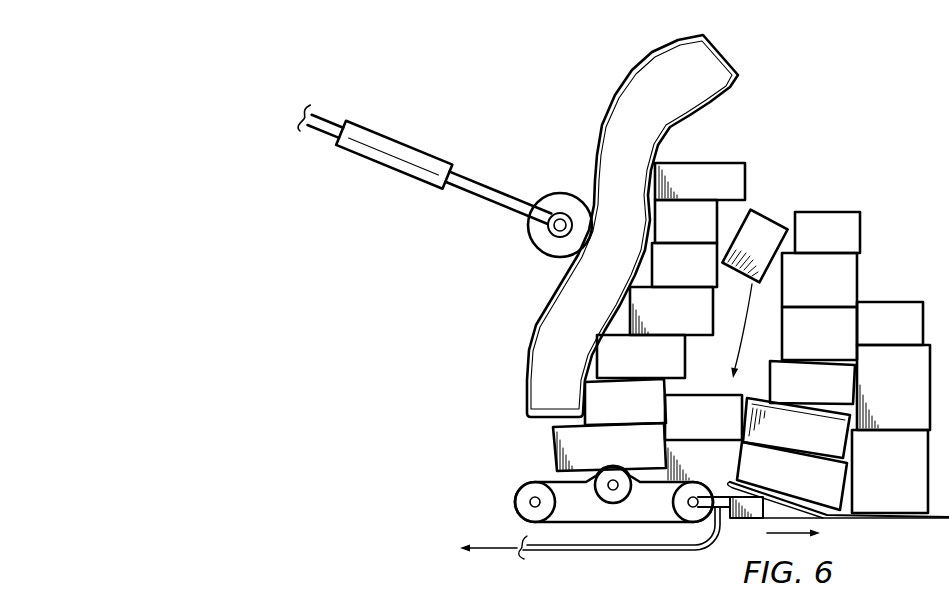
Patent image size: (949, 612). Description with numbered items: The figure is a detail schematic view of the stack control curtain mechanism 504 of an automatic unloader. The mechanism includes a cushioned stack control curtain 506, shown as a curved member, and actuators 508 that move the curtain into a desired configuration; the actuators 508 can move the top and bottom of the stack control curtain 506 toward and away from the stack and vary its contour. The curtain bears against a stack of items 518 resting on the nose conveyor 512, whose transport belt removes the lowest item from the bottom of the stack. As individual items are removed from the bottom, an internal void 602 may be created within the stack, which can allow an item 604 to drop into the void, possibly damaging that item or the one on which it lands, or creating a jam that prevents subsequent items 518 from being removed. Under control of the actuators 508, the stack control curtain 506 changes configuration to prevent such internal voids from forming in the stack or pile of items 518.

The stack control curtain mechanism 504 is at (762, 66).
The stack control curtain 506 is at (614, 88).
The actuators 508 is at (486, 228).
The nose conveyor 512 is at (575, 525).
The items 518 is at (835, 168).
The internal void 602 is at (765, 327).
The item 604 is at (768, 211).